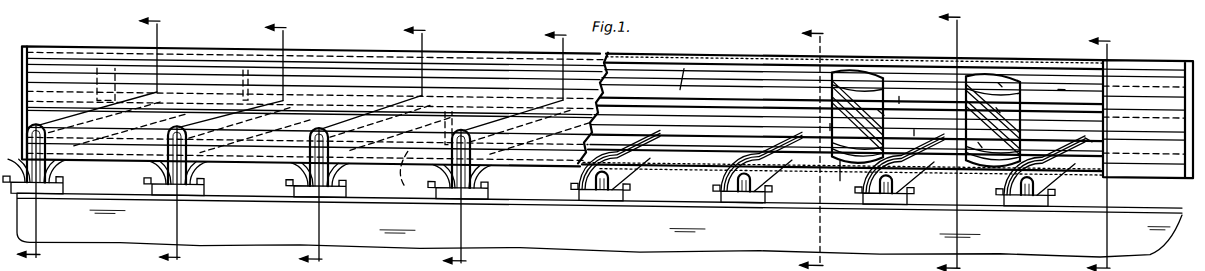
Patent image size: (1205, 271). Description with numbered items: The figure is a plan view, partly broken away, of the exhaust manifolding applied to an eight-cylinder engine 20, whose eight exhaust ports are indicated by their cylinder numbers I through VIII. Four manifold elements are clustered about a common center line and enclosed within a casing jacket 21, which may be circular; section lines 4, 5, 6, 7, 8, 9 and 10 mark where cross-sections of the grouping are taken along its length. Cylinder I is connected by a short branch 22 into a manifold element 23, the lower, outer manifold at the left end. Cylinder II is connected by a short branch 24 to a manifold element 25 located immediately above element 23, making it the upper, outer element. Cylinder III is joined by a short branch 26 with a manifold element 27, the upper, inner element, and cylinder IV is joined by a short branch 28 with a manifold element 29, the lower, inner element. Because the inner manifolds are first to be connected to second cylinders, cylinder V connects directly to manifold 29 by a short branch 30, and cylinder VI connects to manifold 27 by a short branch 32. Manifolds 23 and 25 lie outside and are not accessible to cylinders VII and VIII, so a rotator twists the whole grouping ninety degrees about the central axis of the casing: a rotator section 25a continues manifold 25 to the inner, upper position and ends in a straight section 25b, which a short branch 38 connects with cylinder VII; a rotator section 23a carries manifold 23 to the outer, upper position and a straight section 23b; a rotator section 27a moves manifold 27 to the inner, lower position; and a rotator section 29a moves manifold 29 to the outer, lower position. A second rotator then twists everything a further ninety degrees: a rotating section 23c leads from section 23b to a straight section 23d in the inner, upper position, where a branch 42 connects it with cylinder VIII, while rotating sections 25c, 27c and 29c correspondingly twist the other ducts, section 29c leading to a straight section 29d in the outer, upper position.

The engine 20 is at (97, 243).
The casing jacket 21 is at (60, 64).
The short branch 22 is at (62, 165).
The manifold element 23 is at (112, 50).
The rotator section 23a is at (838, 65).
The straight section 23b is at (900, 89).
The rotating section 23c is at (972, 88).
The straight section 23d is at (1088, 126).
The short branch 24 is at (203, 165).
The manifold element 25 is at (360, 65).
The rotator section 25a is at (882, 99).
The straight section 25b is at (915, 123).
The rotating section 25c is at (980, 133).
The short branch 26 is at (345, 164).
The manifold element 27 is at (685, 126).
The rotator section 27a is at (847, 175).
The rotating section 27c is at (998, 97).
The short branch 28 is at (488, 163).
The manifold element 29 is at (445, 111).
The rotator section 29a is at (830, 113).
The rotating section 29c is at (1000, 72).
The straight section 29d is at (1060, 77).
The short branch 30 is at (627, 155).
The short branch 32 is at (764, 151).
The short branch 38 is at (904, 158).
The branch 42 is at (1050, 158).
The section line 4— 4 is at (89, 136).
The section line 5— 5 is at (223, 139).
The section line 6— 6 is at (362, 140).
The section line 7— 7 is at (505, 142).
The section line 8— 8 is at (811, 142).
The section line 9— 9 is at (949, 135).
The section line 10— 10 is at (1102, 145).
The cylinder I is at (54, 172).
The cylinder II is at (195, 175).
The cylinder III is at (337, 177).
The cylinder IV is at (477, 179).
The cylinder V is at (619, 181).
The cylinder VI is at (758, 183).
The cylinder VII is at (899, 186).
The cylinder VIII is at (1042, 187).